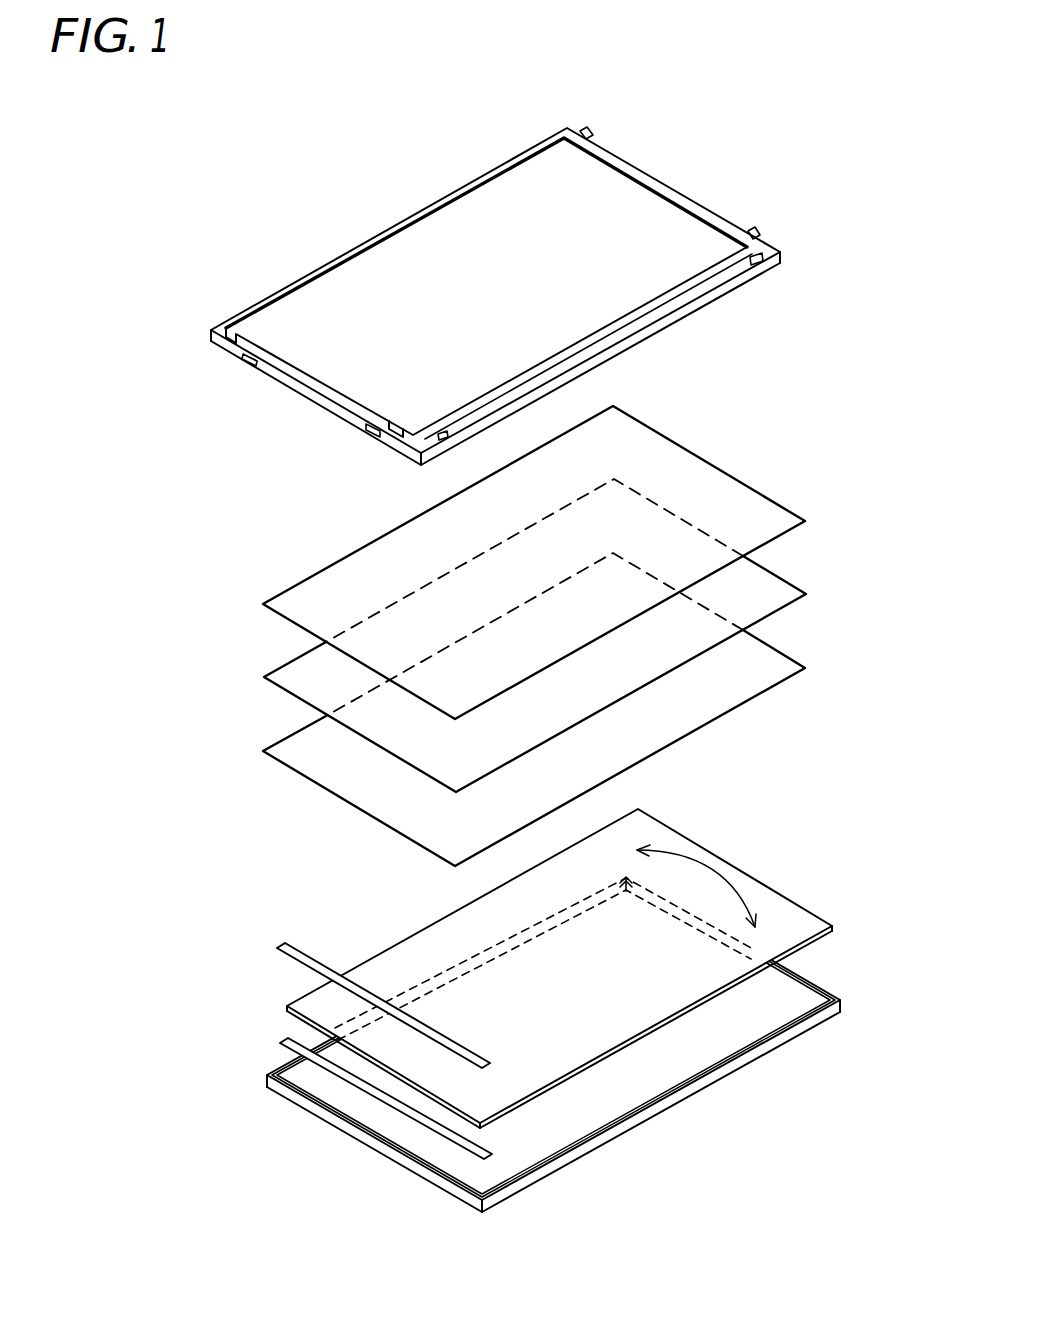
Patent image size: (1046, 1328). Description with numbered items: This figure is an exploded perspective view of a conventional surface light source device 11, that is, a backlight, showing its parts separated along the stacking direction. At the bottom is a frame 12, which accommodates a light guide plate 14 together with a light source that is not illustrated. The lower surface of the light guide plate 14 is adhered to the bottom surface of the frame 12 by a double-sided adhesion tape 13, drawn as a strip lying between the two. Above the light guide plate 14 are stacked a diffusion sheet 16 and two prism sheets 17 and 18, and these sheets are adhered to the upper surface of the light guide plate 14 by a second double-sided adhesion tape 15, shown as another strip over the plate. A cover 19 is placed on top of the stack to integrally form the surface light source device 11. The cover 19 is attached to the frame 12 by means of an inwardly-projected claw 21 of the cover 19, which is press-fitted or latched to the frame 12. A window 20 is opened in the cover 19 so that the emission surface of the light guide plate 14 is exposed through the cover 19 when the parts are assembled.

The surface light source device 11 is at (782, 132).
The frame 12 is at (716, 1076).
The double-sided adhesion tape 13 is at (358, 1086).
The light guide plate 14 is at (516, 993).
The double-sided adhesion tape 15 is at (309, 963).
The diffusion sheet 16 is at (376, 801).
The prism sheet 17 is at (330, 696).
The prism sheet 18 is at (386, 563).
The cover 19 is at (690, 295).
The window 20 is at (448, 238).
The claw 21 is at (249, 365).